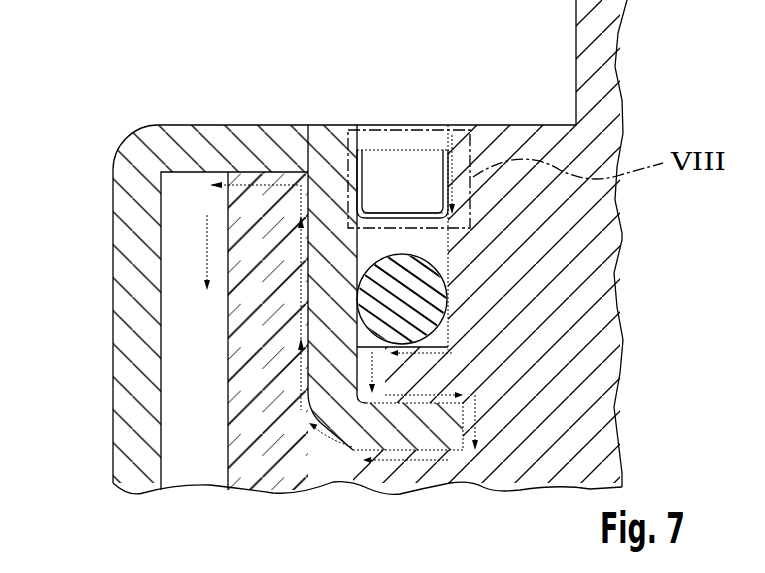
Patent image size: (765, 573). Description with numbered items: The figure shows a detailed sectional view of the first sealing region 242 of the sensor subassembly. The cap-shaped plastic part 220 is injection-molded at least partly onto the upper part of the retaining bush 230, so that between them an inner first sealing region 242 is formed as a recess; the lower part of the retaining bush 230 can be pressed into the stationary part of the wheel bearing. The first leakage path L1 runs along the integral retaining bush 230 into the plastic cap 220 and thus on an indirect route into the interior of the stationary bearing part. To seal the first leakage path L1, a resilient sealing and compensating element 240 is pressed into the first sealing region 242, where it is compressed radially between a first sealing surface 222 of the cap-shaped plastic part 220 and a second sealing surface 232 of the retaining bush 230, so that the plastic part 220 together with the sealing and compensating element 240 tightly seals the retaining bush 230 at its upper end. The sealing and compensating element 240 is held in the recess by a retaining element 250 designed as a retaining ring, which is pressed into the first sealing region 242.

The cap-shaped plastic part 220 is at (590, 262).
The first sealing surface 222 is at (415, 300).
The retaining bush 230 is at (128, 204).
The second sealing surface 232 is at (385, 335).
The sealing and compensating element 240 is at (390, 280).
The first sealing region 242 is at (400, 74).
The retaining element 250 is at (417, 177).
The first leakage path L1 is at (265, 180).